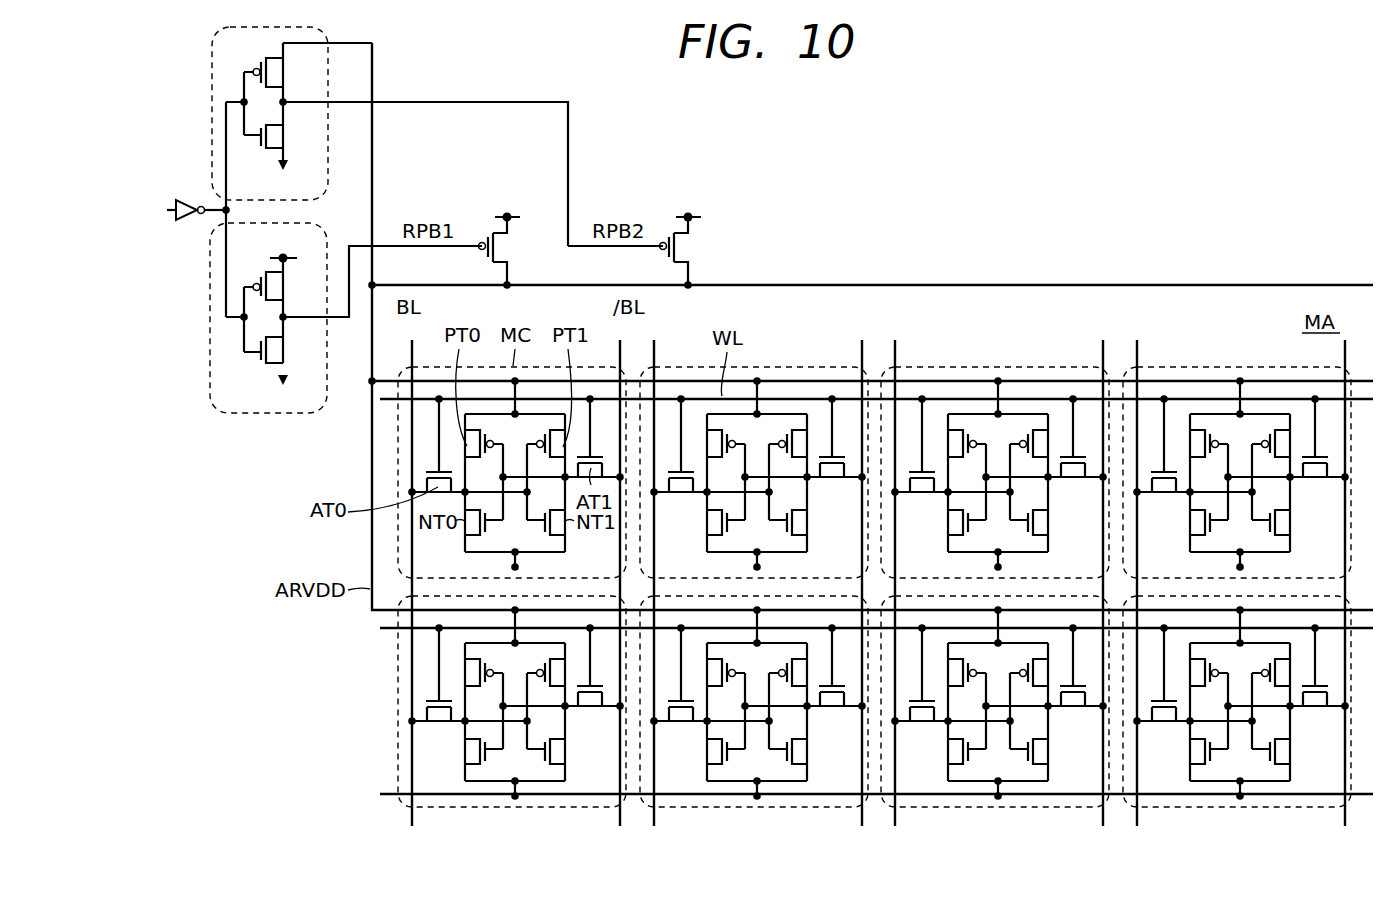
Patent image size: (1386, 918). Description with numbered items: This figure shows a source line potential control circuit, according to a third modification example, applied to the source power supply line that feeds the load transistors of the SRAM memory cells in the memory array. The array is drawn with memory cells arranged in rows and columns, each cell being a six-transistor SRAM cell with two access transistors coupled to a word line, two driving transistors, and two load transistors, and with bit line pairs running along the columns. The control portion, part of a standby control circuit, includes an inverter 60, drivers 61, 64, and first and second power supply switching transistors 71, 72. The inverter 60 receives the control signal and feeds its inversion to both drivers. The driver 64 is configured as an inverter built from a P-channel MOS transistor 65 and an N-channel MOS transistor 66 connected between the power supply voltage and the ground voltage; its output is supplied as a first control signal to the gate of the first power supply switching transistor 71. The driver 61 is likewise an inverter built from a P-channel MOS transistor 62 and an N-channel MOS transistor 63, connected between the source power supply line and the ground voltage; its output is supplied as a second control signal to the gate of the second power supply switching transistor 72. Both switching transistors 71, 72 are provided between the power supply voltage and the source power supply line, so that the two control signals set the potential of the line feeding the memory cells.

The inverter 60 is at (184, 200).
The driver 61 is at (366, 136).
The P-channel MOS transistor 62 is at (287, 73).
The N-channel MOS transistor 63 is at (287, 136).
The driver 64 is at (322, 318).
The P-channel MOS transistor 65 is at (287, 288).
The N-channel MOS transistor 66 is at (287, 353).
The first power supply switching transistor 71 is at (500, 246).
The second power supply switching transistor 72 is at (681, 247).